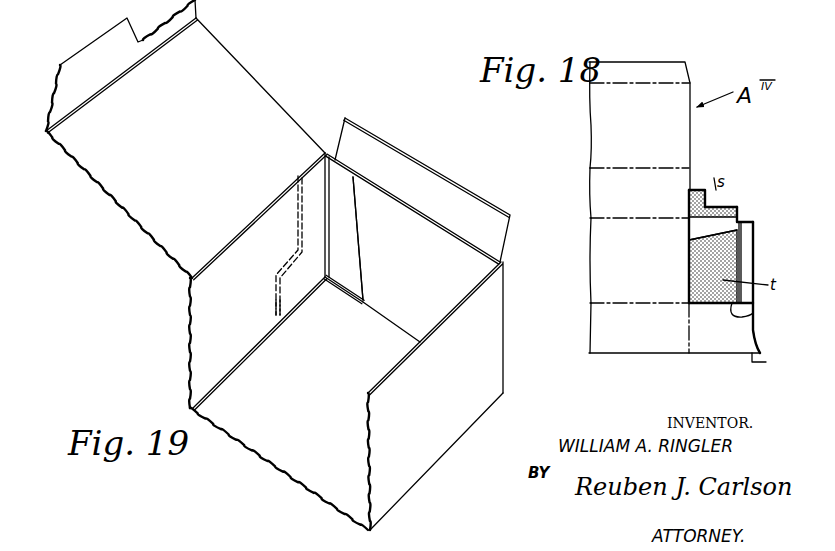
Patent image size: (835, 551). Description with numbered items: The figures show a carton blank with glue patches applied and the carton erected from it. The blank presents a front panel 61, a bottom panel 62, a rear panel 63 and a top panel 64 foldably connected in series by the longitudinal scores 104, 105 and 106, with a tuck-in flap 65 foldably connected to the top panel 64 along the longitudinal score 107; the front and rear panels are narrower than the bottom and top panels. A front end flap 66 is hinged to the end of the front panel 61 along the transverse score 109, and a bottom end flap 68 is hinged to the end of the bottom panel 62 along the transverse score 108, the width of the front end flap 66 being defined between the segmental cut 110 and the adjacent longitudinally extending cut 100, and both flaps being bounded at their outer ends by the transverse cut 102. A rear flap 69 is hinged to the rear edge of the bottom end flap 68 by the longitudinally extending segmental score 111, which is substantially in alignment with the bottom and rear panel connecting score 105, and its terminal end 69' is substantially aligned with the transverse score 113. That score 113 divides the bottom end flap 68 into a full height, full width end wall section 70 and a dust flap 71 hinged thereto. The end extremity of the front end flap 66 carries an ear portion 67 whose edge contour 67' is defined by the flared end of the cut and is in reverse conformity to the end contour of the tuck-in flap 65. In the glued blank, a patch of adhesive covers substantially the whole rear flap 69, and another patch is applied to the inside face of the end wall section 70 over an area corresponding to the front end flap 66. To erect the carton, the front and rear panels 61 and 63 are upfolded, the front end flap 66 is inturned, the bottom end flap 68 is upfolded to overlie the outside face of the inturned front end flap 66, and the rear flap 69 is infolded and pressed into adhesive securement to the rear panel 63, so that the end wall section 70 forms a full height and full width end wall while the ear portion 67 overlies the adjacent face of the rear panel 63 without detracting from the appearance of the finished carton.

In FIG. 19, the longitudinally extending cut 100 is at (58, 0).
In FIG. 18, the longitudinally extending cut 100 is at (740, 0).
In FIG. 19, the front panel 61 is at (397, 440).
In FIG. 18, the front panel 61 is at (612, 325).
In FIG. 19, the bottom panel 62 is at (273, 442).
In FIG. 18, the bottom panel 62 is at (612, 262).
In FIG. 19, the rear panel 63 is at (207, 318).
In FIG. 18, the rear panel 63 is at (603, 192).
In FIG. 19, the top panel 64 is at (123, 183).
In FIG. 18, the top panel 64 is at (608, 127).
In FIG. 19, the tuck-in flap 65 is at (73, 82).
In FIG. 18, the tuck-in flap 65 is at (632, 72).
In FIG. 19, the front end flap 66 is at (413, 297).
In FIG. 18, the front end flap 66 is at (718, 342).
In FIG. 19, the ear portion 67 is at (413, 196).
In FIG. 18, the ear portion 67 is at (771, 363).
In FIG. 19, the edge contour of ear portion 67' is at (376, 238).
In FIG. 18, the edge contour of ear portion 67' is at (773, 341).
In FIG. 18, the bottom end flap 68 is at (757, 235).
In FIG. 19, the rear flap 69 is at (271, 245).
In FIG. 18, the rear flap 69 is at (754, 190).
In FIG. 19, the terminal end of rear flap 69' is at (292, 165).
In FIG. 18, the terminal end of rear flap 69' is at (763, 204).
In FIG. 19, the end wall section 70 is at (340, 243).
In FIG. 18, the end wall section 70 is at (705, 230).
In FIG. 19, the dust flap 71 is at (423, 175).
In FIG. 18, the dust flap 71 is at (745, 250).
In FIG. 18, the transverse cut 102 is at (688, 197).
In FIG. 19, the longitudinal score 104 is at (372, 537).
In FIG. 18, the longitudinal score 104 is at (603, 303).
In FIG. 19, the longitudinal score 105 is at (230, 370).
In FIG. 18, the longitudinal score 105 is at (600, 220).
In FIG. 19, the longitudinal score 106 is at (235, 236).
In FIG. 18, the longitudinal score 106 is at (598, 167).
In FIG. 19, the longitudinal score 107 is at (112, 82).
In FIG. 18, the longitudinal score 107 is at (603, 87).
In FIG. 19, the transverse score 108 is at (342, 290).
In FIG. 18, the transverse score 108 is at (687, 257).
In FIG. 18, the transverse score 109 is at (687, 323).
In FIG. 18, the segmental cut 110 is at (753, 313).
In FIG. 18, the segmental score 111 is at (697, 213).
In FIG. 19, the transverse score 113 is at (353, 163).
In FIG. 18, the transverse score 113 is at (738, 267).